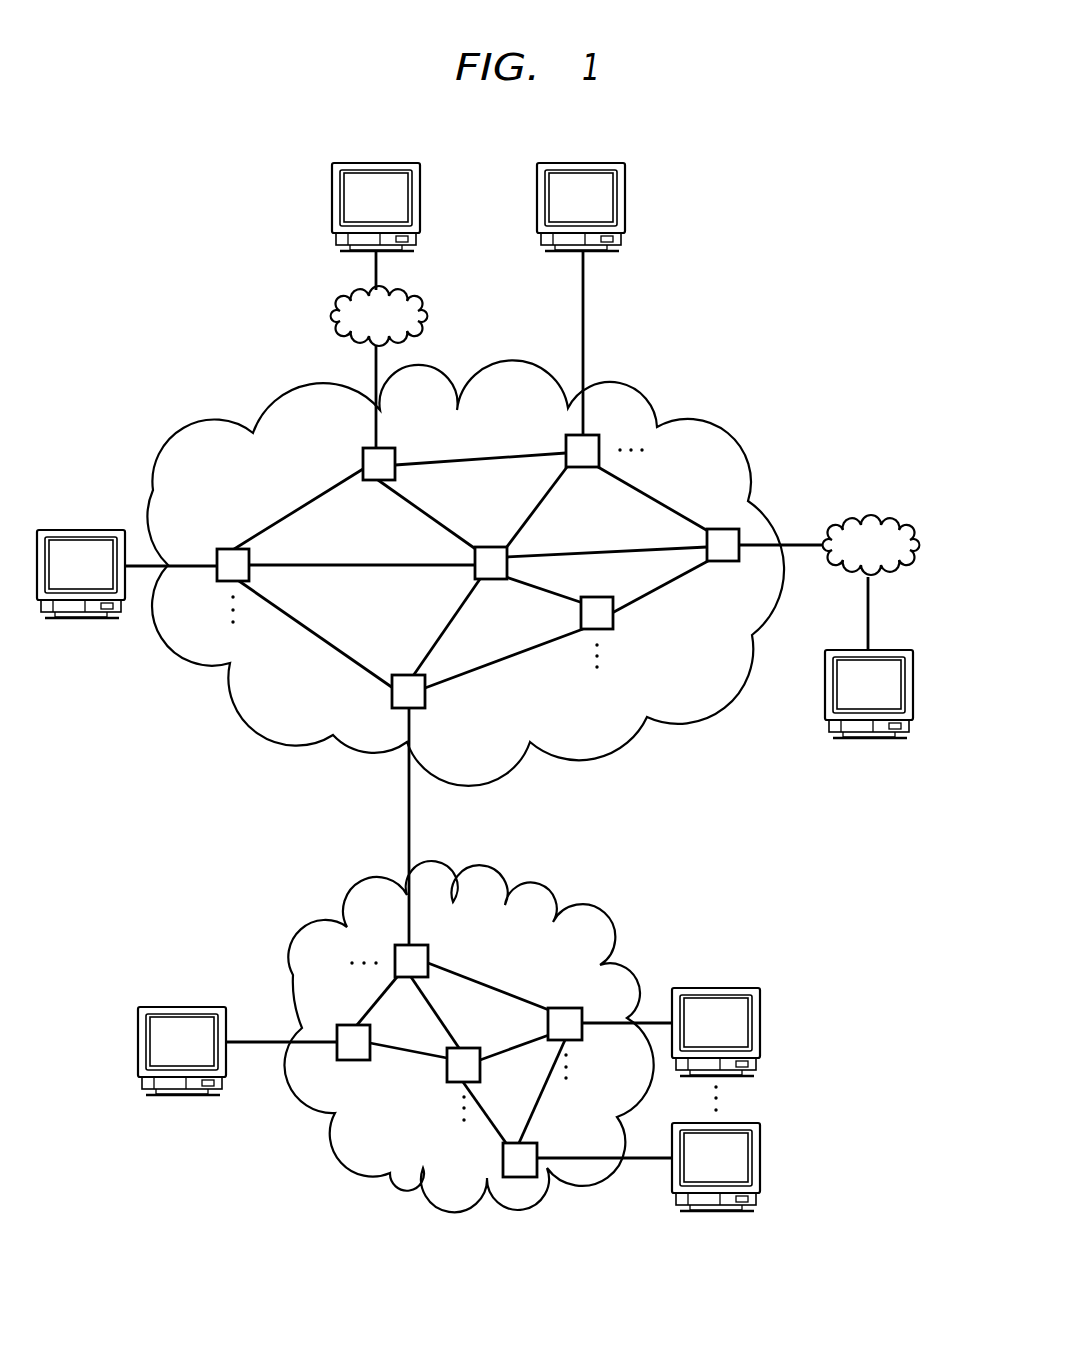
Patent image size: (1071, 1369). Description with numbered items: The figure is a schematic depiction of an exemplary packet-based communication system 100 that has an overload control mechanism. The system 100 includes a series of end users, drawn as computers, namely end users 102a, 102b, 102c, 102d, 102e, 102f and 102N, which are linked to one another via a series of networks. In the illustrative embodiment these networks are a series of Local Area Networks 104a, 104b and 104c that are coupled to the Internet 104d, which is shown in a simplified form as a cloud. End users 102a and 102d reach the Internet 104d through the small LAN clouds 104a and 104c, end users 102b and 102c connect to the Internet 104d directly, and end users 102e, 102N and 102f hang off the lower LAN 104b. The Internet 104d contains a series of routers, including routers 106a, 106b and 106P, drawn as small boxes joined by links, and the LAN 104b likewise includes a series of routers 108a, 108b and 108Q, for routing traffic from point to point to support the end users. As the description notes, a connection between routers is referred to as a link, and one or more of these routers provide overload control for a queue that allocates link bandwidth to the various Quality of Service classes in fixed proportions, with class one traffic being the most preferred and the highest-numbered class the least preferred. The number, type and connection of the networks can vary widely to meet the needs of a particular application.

The packet-based communication system 100 is at (731, 191).
The end user 102a is at (332, 198).
The end user 102b is at (82, 530).
The end user 102c is at (537, 198).
The end user 102d is at (862, 742).
The end user 102e is at (183, 1007).
The end user 102f is at (760, 1160).
The end user 102N is at (760, 1024).
The Local Area Network 104a is at (336, 316).
The Local Area Network 104b is at (508, 874).
The Local Area Network 104c is at (870, 514).
The Internet 104d is at (478, 356).
The router 106a is at (228, 547).
The router 106b is at (370, 484).
The router 106P is at (727, 564).
The router 108a is at (430, 958).
The router 108b is at (352, 1062).
The router 108Q is at (585, 1043).